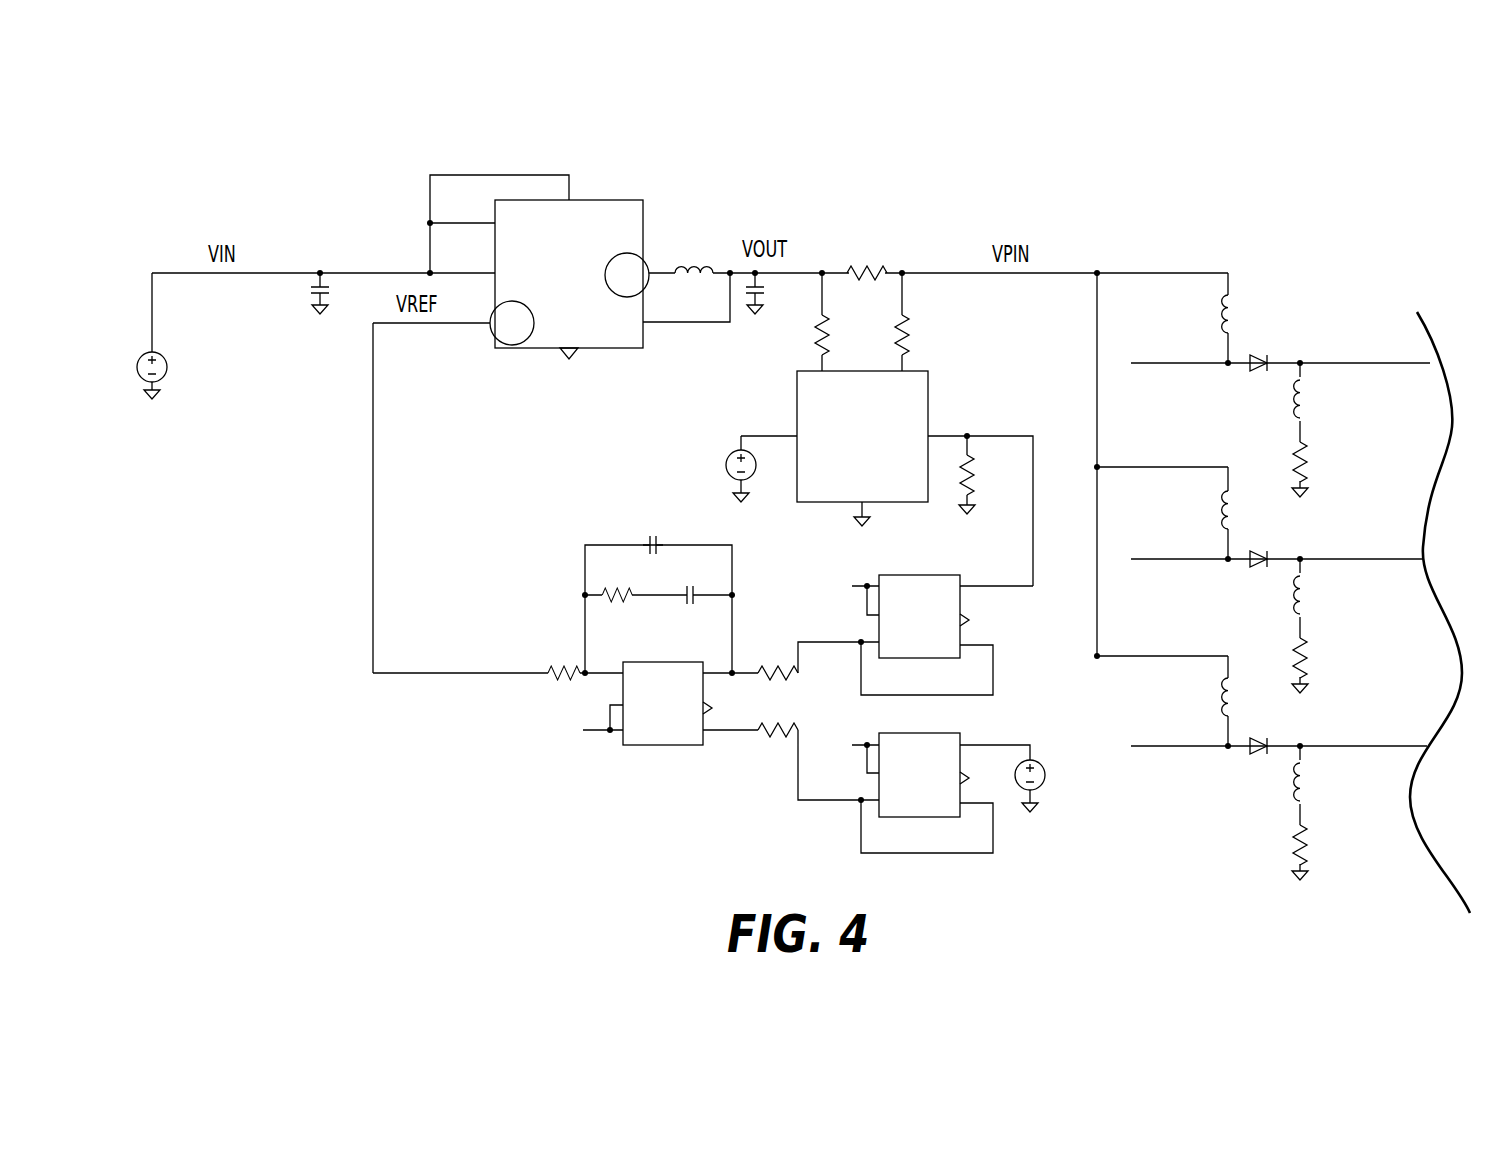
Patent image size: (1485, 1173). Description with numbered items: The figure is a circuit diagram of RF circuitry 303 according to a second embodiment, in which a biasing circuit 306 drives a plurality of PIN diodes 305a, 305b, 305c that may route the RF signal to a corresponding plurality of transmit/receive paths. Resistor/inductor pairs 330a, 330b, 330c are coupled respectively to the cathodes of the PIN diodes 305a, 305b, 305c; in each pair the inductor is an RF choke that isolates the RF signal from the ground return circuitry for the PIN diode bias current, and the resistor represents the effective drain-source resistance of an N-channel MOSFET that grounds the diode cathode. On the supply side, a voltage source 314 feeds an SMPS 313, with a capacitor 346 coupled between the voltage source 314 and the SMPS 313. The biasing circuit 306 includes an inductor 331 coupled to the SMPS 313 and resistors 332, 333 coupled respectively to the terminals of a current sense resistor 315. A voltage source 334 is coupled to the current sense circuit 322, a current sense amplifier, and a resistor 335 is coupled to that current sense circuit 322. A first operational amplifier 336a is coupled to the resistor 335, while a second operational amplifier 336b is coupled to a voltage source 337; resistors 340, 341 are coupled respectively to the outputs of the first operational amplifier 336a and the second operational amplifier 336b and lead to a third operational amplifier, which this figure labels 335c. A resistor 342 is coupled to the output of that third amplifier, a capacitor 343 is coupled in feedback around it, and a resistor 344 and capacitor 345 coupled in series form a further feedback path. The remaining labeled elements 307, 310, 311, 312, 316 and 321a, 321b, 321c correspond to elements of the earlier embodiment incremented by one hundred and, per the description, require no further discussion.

The RF circuitry 303 is at (1343, 168).
The PIN diode 305a is at (1252, 372).
The PIN diode 305b is at (1252, 568).
The PIN diode 305c is at (1252, 755).
The biasing circuit 306 is at (841, 220).
The switching regulator U2 307 is at (570, 253).
The reference pin Ref 310 is at (509, 345).
The switch pin SW 311 is at (647, 262).
The error amplifier MAX44290 312 is at (666, 680).
The SMPS 313 is at (594, 238).
The voltage source 314 is at (138, 374).
The current sense resistor 315 is at (868, 270).
The output capacitor C11 316 is at (749, 312).
The inductor L2 321a is at (1220, 308).
The inductor L4 321b is at (1220, 504).
The inductor L6 321c is at (1220, 691).
The current sense circuit 322 is at (928, 392).
The resistor/inductor pair 330a is at (1298, 432).
The resistor/inductor pair 330b is at (1298, 628).
The resistor/inductor pair 330c is at (1298, 815).
The inductor 331 is at (700, 270).
The resistor 332 is at (815, 335).
The resistor 333 is at (918, 305).
The voltage source 334 is at (726, 452).
The resistor 335 is at (950, 475).
The amplifier MAX44290 335c is at (633, 746).
The first operational amplifier 336a is at (916, 575).
The second operational amplifier 336b is at (950, 733).
The voltage source 337 is at (1047, 775).
The resistor 340 is at (780, 680).
The resistor 341 is at (760, 737).
The resistor 342 is at (548, 677).
The capacitor 343 is at (645, 540).
The resistor 344 is at (600, 590).
The capacitor 345 is at (696, 590).
The capacitor 346 is at (314, 310).